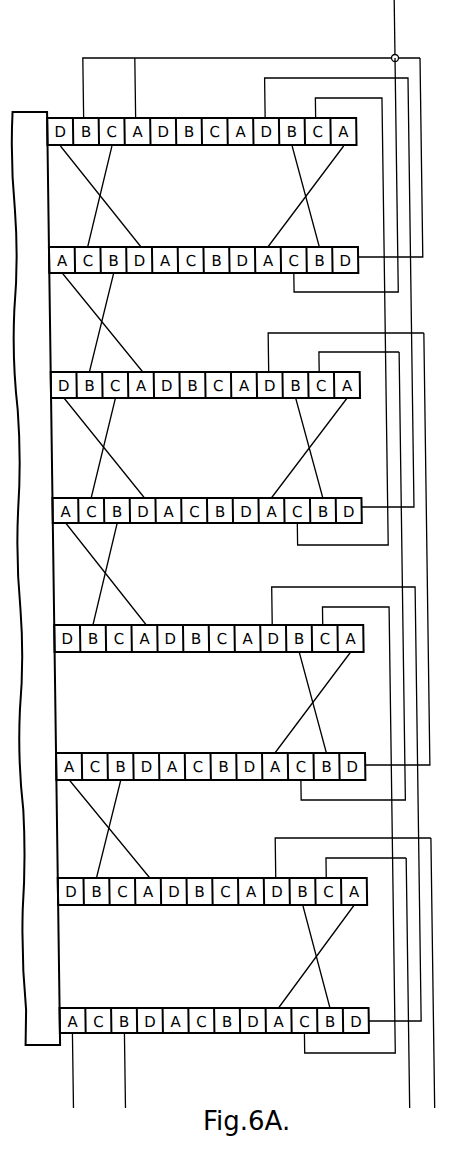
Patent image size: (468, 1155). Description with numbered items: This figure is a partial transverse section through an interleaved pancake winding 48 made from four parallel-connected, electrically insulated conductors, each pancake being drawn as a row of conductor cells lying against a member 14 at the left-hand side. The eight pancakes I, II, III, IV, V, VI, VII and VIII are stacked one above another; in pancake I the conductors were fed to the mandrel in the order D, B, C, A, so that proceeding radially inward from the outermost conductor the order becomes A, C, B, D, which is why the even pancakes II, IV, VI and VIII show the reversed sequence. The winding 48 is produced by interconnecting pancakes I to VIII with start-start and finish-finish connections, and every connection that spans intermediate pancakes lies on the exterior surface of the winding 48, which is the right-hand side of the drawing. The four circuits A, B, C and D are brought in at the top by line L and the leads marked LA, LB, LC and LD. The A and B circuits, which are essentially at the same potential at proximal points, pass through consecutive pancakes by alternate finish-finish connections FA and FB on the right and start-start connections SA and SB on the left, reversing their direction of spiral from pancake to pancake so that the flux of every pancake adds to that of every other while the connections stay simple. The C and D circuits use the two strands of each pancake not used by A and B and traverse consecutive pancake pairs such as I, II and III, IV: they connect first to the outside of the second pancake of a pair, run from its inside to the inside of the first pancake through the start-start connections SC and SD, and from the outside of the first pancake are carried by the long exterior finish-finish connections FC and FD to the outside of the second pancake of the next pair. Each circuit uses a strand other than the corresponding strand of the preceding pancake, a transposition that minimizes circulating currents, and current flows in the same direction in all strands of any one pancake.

The common bus bar 14 is at (25, 112).
The winding 48 is at (252, 43).
The input line L is at (393, 37).
The line A LA is at (136, 80).
The line B LB is at (121, 58).
The line C LC is at (397, 70).
The line D LD is at (421, 68).
The feed line A FA is at (325, 168).
The feed line B FB is at (290, 174).
The feed line C FC is at (381, 318).
The feed line D FD is at (410, 306).
The cross connection A SA is at (116, 341).
The cross connection B SB is at (108, 294).
The cross connection C SC is at (104, 168).
The cross connection D SD is at (113, 211).
The pancake I is at (425, 136).
The pancake II is at (421, 266).
The pancake III is at (422, 391).
The pancake IV is at (428, 517).
The pancake V is at (425, 646).
The pancake VI is at (421, 771).
The pancake VII is at (422, 900).
The pancake VIII is at (422, 1029).